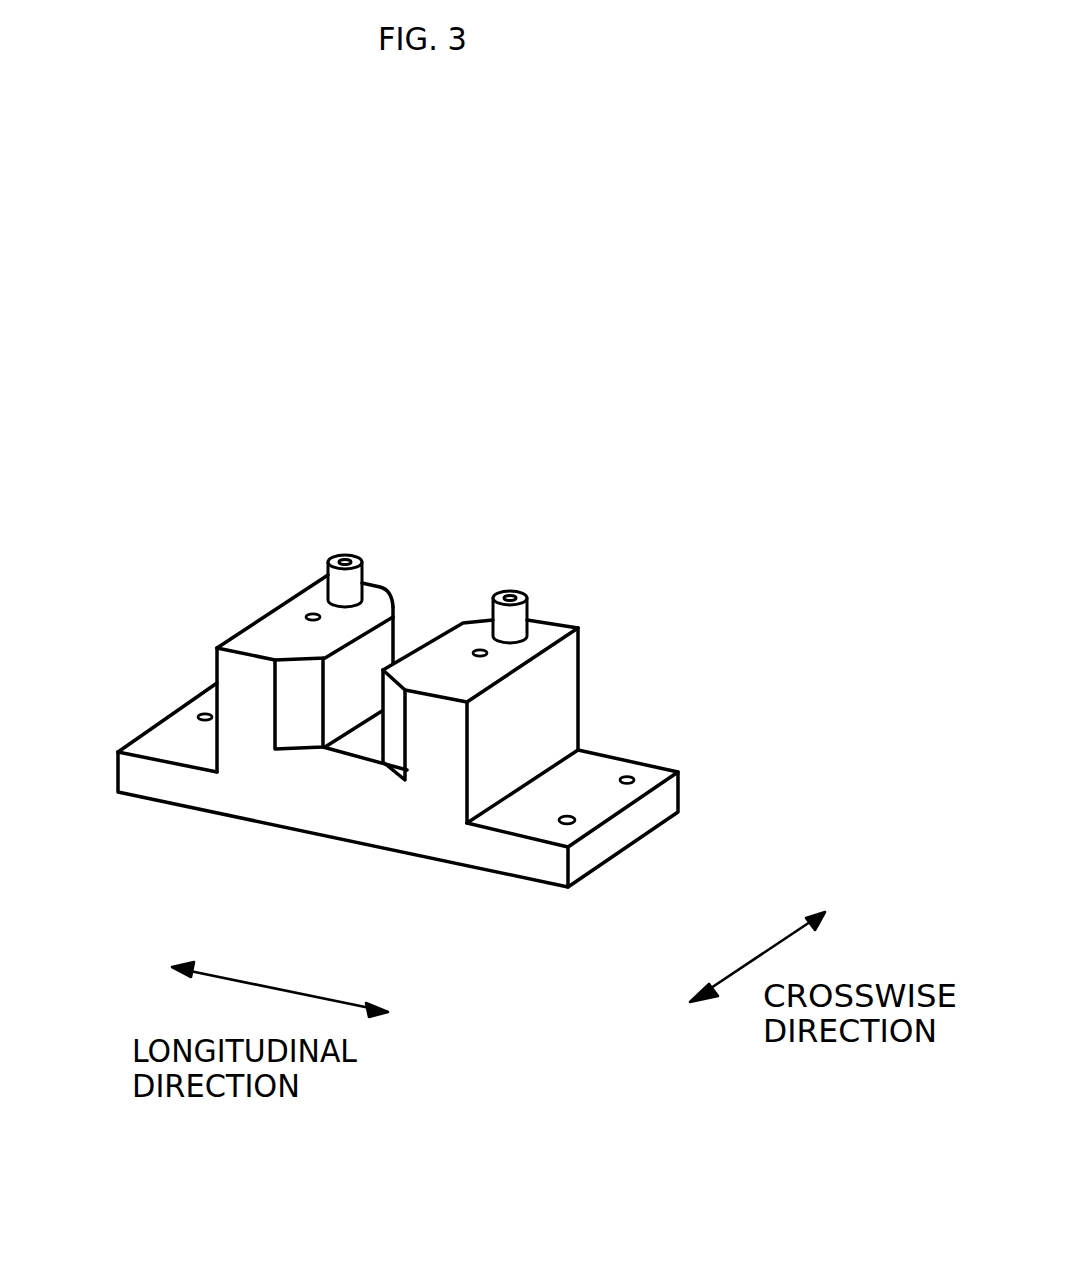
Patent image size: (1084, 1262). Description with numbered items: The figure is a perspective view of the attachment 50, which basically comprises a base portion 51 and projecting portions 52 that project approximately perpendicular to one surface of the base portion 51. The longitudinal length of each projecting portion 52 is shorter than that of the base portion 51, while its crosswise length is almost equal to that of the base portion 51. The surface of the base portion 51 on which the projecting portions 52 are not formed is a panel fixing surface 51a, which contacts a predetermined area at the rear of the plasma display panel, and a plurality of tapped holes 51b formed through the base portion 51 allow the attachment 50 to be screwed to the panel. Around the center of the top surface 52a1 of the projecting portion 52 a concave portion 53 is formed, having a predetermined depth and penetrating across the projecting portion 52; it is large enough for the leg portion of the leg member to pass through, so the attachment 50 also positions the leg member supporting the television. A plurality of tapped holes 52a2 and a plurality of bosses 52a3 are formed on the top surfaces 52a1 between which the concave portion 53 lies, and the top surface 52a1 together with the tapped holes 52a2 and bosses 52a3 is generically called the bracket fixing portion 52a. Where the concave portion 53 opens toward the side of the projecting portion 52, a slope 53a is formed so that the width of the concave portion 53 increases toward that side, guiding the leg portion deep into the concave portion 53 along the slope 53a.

The attachment 50 is at (514, 461).
The base portion 51 is at (542, 865).
The panel fixing surface 51a is at (482, 868).
The tapped holes 51b is at (204, 714).
The projecting portions 52 is at (240, 703).
The bracket fixing portion 52a is at (134, 432).
The top surface 52a1 is at (273, 628).
The tapped holes 52a2 is at (312, 613).
The bosses 52a3 is at (333, 553).
The concave portion 53 is at (413, 633).
The slope 53a is at (290, 722).